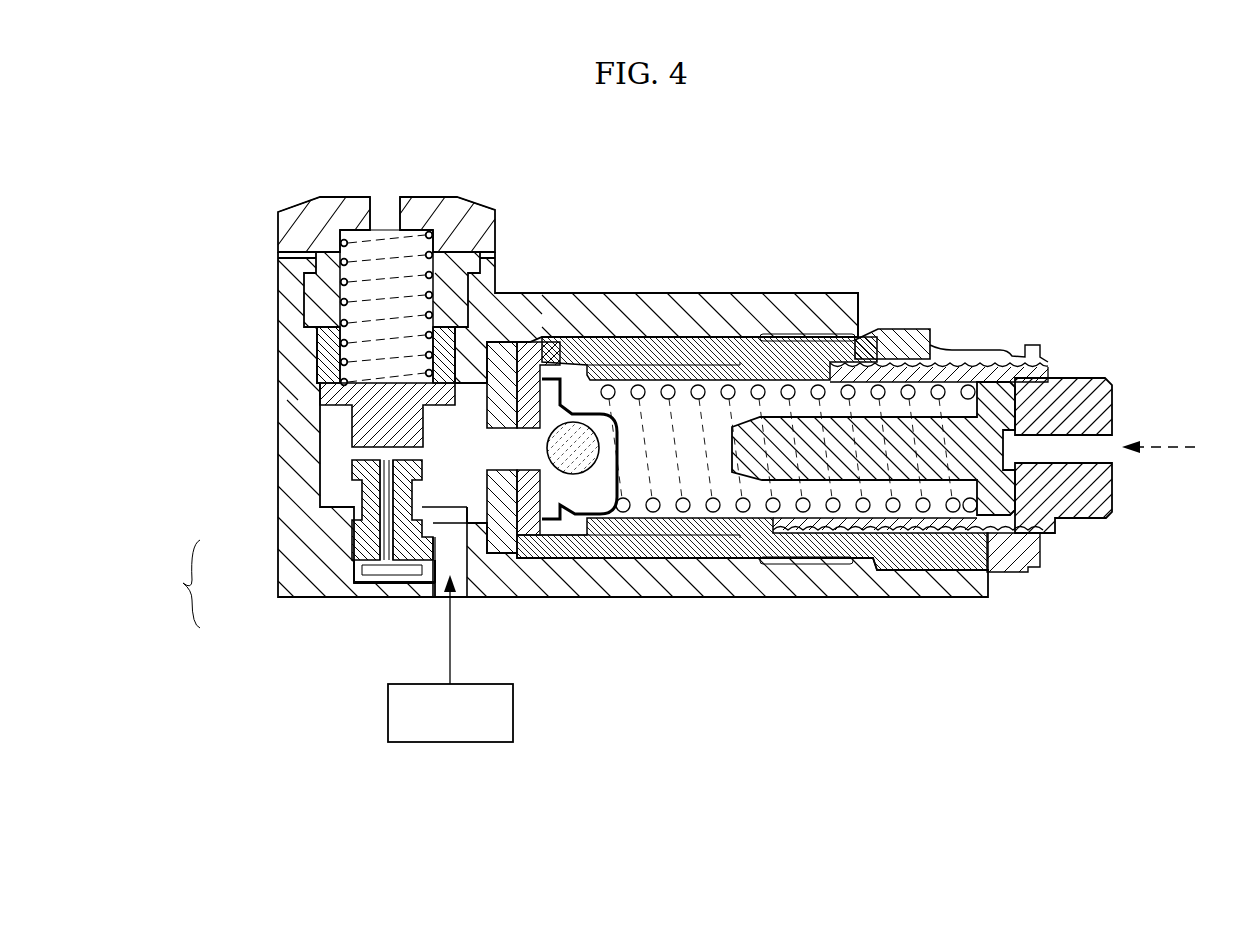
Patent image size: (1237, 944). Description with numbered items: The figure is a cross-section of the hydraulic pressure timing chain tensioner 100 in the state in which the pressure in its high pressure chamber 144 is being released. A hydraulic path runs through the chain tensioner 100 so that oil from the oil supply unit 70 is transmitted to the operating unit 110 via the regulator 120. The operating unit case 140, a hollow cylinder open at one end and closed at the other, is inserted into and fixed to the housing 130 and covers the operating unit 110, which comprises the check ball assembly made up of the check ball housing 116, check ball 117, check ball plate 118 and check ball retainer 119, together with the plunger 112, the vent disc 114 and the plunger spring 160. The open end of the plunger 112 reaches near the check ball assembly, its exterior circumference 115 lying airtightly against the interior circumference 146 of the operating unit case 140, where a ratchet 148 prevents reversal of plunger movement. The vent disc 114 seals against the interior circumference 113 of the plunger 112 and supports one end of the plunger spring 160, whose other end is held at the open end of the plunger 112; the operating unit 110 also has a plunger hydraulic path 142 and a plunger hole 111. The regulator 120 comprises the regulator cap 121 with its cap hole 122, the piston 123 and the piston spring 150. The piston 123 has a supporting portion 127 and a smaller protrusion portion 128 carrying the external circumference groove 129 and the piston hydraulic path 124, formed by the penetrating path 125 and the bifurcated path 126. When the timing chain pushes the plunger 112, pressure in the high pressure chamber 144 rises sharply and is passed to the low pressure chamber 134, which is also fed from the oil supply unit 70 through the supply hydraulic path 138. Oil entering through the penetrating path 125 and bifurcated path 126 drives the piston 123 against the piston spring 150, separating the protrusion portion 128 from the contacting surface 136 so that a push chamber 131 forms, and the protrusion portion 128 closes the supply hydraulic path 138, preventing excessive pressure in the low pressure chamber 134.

The oil supply unit 70 is at (513, 711).
The chain tensioner 100 is at (980, 205).
The operating unit 110 is at (1072, 548).
The plunger hole 111 is at (1060, 448).
The plunger 112 is at (1055, 368).
The interior circumference of the plunger 113 is at (957, 363).
The vent disc 114 is at (897, 463).
The exterior circumference of the plunger 115 is at (993, 363).
The check ball housing 116 is at (525, 343).
The check ball 117 is at (600, 465).
The check ball plate 118 is at (580, 503).
The check ball retainer 119 is at (568, 312).
The regulator 120 is at (270, 180).
The regulator cap 121 is at (452, 225).
The cap hole 122 is at (385, 212).
The piston 123 is at (367, 430).
The piston hydraulic path 124 is at (174, 584).
The penetrating path 125 is at (353, 483).
The bifurcated path 126 is at (375, 540).
The supporting portion 127 is at (330, 378).
The protrusion portion 128 is at (348, 462).
The external circumference groove 129 is at (397, 570).
The housing 130 is at (582, 360).
The push chamber 131 is at (373, 587).
The low pressure chamber 134 is at (465, 473).
The contacting surface 136 is at (387, 577).
The supply hydraulic path 138 is at (447, 560).
The operating unit case 140 is at (898, 345).
The plunger hydraulic path 142 is at (517, 473).
The high pressure chamber 144 is at (590, 550).
The interior circumference of the operating unit case 146 is at (760, 553).
The ratchet 148 is at (850, 345).
The piston spring 150 is at (363, 275).
The plunger spring 160 is at (708, 425).